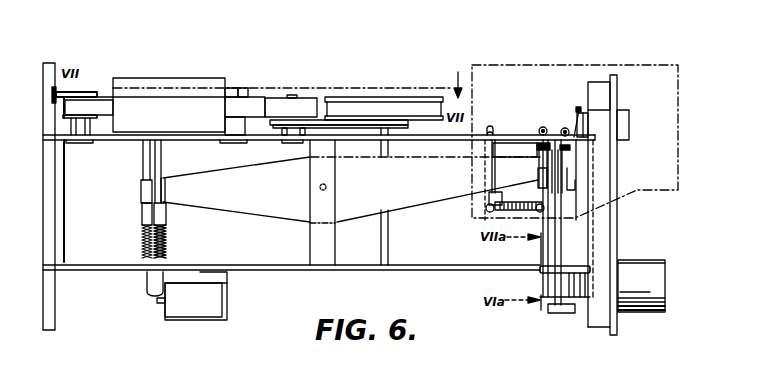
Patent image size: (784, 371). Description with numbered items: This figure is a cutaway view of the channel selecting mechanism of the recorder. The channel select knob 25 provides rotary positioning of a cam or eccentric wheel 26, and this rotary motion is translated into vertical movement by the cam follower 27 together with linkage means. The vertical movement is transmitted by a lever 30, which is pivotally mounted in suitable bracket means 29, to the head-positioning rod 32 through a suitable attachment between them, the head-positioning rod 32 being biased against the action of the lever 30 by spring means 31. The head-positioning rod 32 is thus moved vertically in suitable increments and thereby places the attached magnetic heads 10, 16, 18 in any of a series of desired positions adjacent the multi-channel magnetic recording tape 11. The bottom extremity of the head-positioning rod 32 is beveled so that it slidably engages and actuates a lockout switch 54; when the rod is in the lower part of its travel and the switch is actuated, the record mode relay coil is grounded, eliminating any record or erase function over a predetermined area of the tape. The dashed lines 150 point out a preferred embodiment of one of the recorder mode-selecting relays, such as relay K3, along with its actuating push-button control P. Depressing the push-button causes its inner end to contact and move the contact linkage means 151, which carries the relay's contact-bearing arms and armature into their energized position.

The magnetic head 10 is at (169, 90).
The magnetic head 16 is at (169, 90).
The magnetic head 18 is at (203, 55).
The multi-channel magnetic recording tape 11 is at (253, 97).
The bracket means 29 is at (320, 234).
The lever 30 is at (227, 200).
The spring means 31 is at (143, 232).
The head-positioning rod 32 is at (145, 155).
The lockout switch 54 is at (188, 298).
The dashed lines 150 is at (620, 32).
The contact linkage means 151 is at (577, 111).
The recorder mode-selecting relay K3 is at (507, 153).
The push-button control P is at (625, 125).
The channel select knob 25 is at (660, 268).
The cam or eccentric wheel 26 is at (560, 268).
The cam follower 27 is at (575, 313).